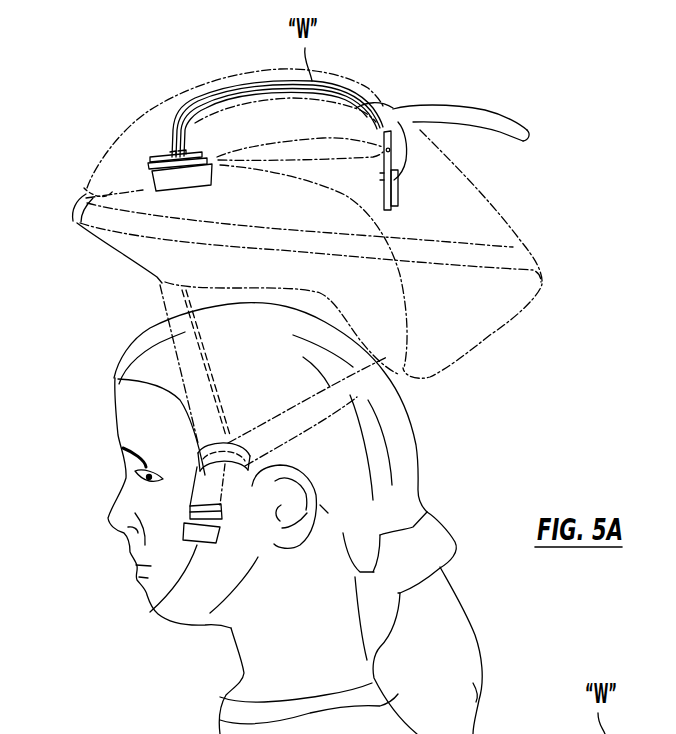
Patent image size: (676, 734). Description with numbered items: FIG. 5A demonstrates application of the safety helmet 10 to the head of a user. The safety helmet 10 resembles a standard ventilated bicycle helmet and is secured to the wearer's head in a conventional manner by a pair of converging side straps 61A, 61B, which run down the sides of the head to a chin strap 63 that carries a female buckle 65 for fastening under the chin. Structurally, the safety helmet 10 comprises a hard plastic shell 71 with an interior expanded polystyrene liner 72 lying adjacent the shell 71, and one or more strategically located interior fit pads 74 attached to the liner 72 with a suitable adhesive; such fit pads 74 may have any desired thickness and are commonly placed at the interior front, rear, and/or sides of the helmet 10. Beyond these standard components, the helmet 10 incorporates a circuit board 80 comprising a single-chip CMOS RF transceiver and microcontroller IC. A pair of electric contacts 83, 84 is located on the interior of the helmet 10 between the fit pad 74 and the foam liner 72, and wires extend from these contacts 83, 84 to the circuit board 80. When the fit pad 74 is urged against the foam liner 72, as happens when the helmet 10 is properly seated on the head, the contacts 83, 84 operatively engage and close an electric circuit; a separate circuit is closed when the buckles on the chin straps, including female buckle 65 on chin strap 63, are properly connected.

The safety helmet 10 is at (122, 107).
The hard plastic shell 71 is at (487, 194).
The interior expanded polystyrene (EPS) liner 72 is at (84, 188).
The interior fit pad 74 is at (152, 172).
The contact 83 is at (217, 162).
The contact 84 is at (152, 157).
The circuit board 80 is at (387, 209).
The converging side strap 61A is at (167, 310).
The converging side strap 61B is at (351, 397).
The chin strap 63 is at (203, 477).
The female buckle 65 is at (150, 612).